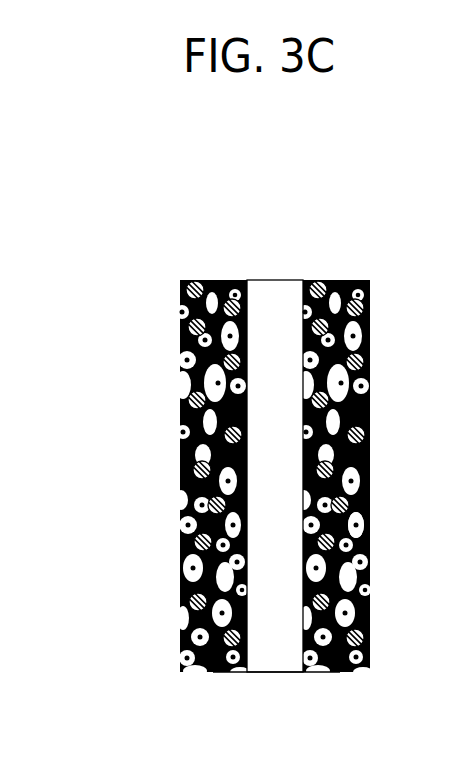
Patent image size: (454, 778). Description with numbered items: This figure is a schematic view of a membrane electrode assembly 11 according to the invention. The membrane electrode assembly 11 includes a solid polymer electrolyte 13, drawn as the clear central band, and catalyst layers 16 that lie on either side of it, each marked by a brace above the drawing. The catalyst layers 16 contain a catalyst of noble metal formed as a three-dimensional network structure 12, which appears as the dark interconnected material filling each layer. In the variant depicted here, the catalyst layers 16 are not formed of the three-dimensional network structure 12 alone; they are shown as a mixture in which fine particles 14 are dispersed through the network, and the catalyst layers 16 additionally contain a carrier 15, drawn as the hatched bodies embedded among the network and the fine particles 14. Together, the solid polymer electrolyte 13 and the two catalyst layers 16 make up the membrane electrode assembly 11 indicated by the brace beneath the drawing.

The membrane electrode assembly 11 is at (307, 455).
The three-dimensional network structure 12 is at (368, 478).
The solid polymer electrolyte 13 is at (270, 300).
The fine particles 14 is at (361, 521).
The carrier 15 is at (363, 643).
The catalyst layers 16 is at (253, 260).